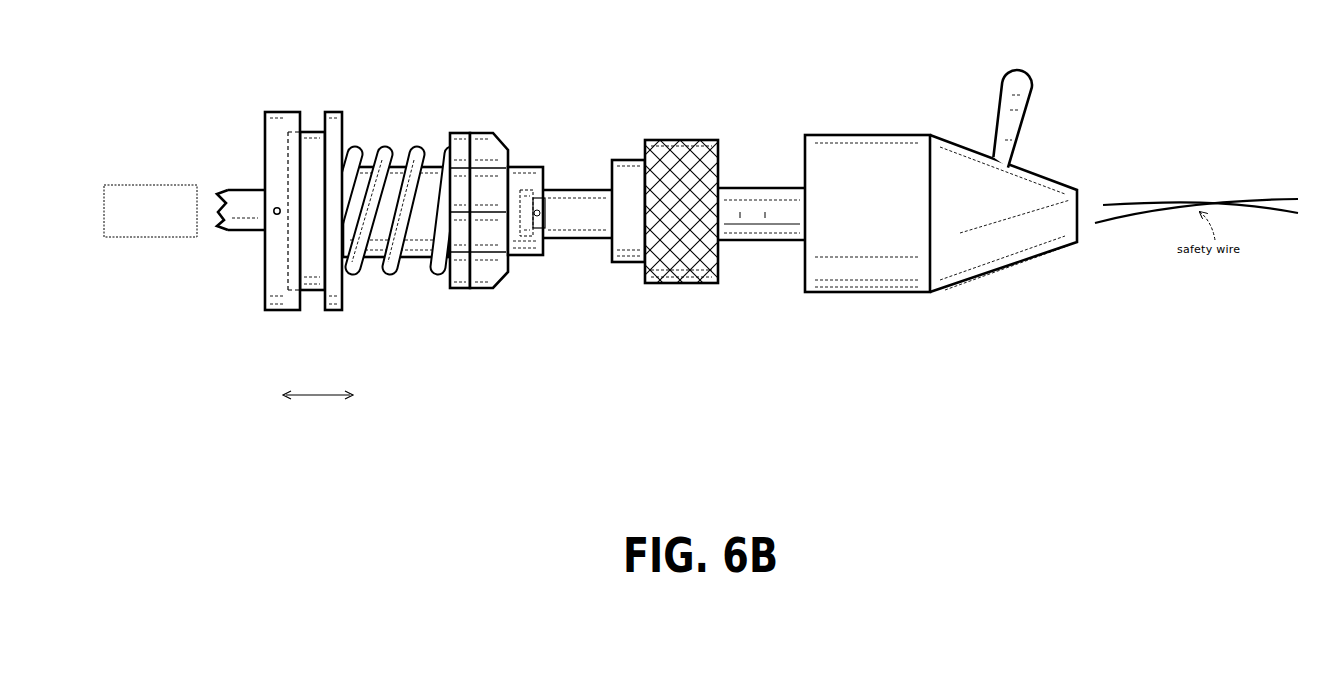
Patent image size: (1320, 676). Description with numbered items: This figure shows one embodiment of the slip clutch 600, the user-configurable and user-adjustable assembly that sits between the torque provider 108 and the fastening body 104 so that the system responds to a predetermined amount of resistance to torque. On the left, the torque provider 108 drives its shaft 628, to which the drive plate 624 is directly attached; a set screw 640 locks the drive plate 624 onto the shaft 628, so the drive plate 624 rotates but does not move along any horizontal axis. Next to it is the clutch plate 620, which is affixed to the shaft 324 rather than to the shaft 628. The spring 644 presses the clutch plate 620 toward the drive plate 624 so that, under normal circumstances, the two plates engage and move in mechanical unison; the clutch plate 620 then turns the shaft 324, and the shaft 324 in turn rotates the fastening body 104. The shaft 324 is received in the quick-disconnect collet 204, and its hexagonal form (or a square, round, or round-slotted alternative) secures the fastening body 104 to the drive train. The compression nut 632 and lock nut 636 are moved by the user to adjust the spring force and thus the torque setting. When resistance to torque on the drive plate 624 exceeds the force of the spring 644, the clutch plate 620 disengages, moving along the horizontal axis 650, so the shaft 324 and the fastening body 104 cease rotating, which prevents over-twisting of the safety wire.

The torque provider 108 is at (150, 211).
The shaft 628 is at (243, 205).
The drive plate 624 is at (283, 278).
The clutch plate 620 is at (333, 128).
The spring 644 is at (388, 148).
The compression nut 632 is at (448, 290).
The lock nut 636 is at (487, 270).
The set screw 640 is at (545, 202).
The shaft 324 is at (753, 215).
The quick-disconnect collet 204 is at (705, 282).
The fastening body 104 is at (941, 180).
The horizontal axis 650 is at (308, 413).
The slip clutch 600 is at (1012, 415).